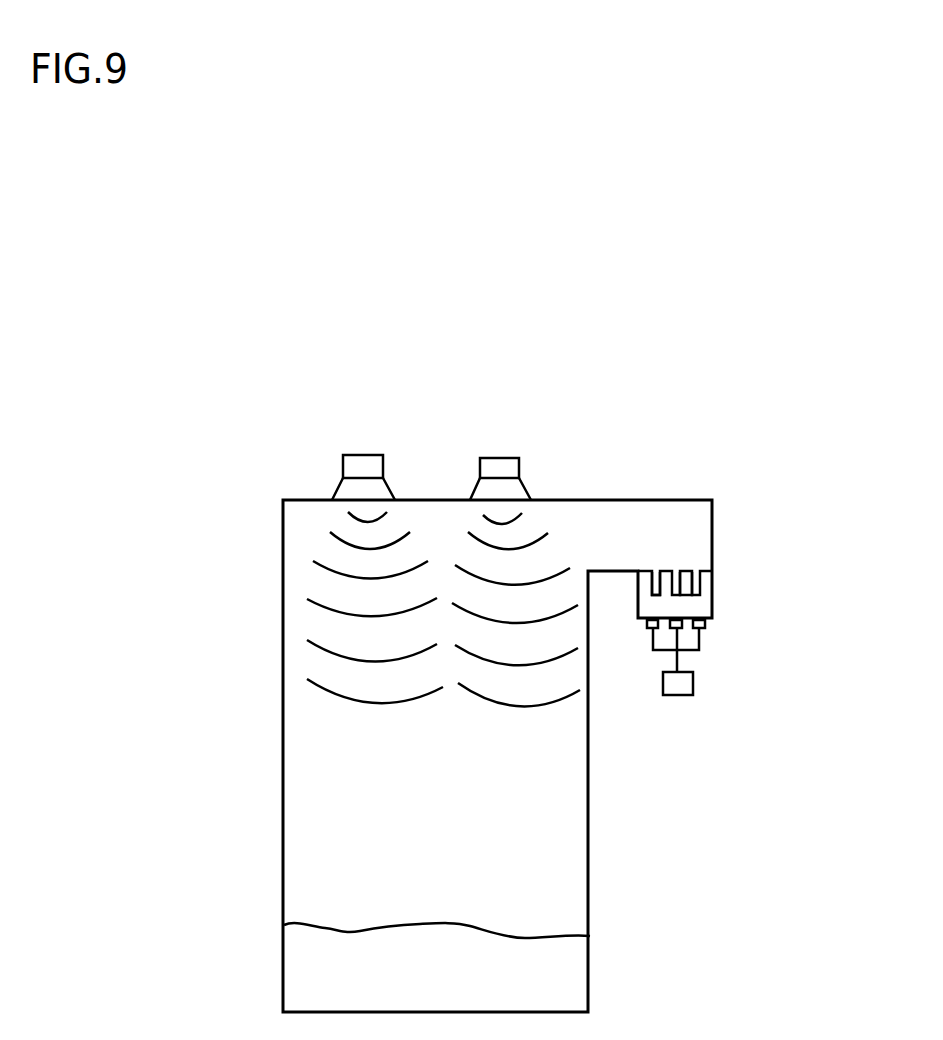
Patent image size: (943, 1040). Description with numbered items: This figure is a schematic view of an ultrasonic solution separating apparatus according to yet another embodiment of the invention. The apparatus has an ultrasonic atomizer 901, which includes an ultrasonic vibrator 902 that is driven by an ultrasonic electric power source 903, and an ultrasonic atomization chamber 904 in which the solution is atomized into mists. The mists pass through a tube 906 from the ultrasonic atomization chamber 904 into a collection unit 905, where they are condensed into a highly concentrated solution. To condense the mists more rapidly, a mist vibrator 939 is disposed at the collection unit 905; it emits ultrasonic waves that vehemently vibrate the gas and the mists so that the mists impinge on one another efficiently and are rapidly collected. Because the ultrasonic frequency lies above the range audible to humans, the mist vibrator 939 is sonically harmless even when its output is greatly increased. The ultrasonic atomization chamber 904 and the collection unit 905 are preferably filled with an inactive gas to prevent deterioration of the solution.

The ultrasonic atomizer 901 is at (714, 717).
The ultrasonic vibrator 902 is at (706, 624).
The ultrasonic electric power source 903 is at (713, 680).
The ultrasonic atomization chamber 904 is at (724, 594).
The collection unit 905 is at (297, 790).
The tube 906 is at (642, 572).
The mist vibrator 939 is at (362, 490).